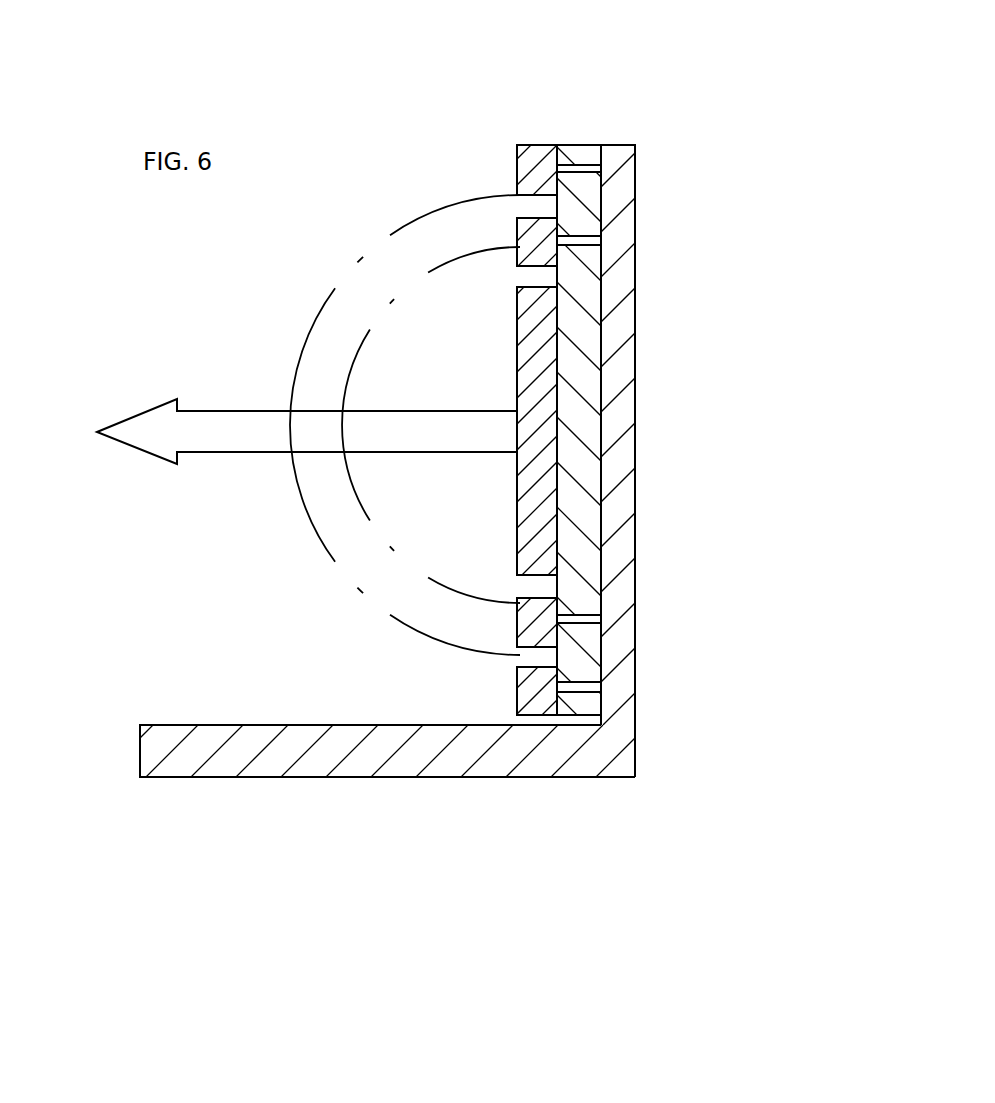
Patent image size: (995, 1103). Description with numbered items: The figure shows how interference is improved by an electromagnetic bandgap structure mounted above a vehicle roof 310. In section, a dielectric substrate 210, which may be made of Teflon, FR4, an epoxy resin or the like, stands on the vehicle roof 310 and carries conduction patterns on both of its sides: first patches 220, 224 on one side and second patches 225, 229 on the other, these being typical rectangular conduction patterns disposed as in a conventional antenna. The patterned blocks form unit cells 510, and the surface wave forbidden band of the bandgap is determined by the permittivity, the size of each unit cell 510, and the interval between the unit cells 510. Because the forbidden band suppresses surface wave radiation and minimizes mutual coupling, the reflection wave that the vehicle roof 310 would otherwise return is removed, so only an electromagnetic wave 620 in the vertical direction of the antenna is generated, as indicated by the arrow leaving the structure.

The unit cell 510 is at (539, 174).
The second patch 225 is at (529, 458).
The second patch 229 is at (635, 183).
The dielectric substrate 210 is at (575, 417).
The first patch 220 is at (562, 450).
The first patch 224 is at (540, 535).
The vehicle roof 310 is at (387, 777).
The electromagnetic wave 620 is at (135, 448).